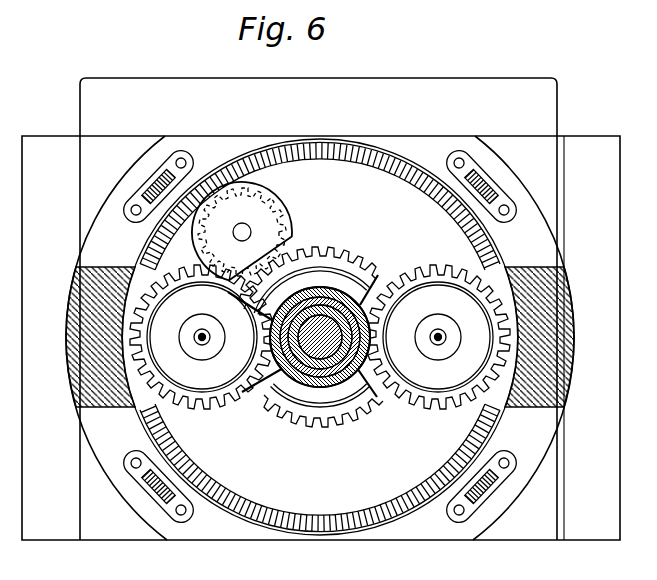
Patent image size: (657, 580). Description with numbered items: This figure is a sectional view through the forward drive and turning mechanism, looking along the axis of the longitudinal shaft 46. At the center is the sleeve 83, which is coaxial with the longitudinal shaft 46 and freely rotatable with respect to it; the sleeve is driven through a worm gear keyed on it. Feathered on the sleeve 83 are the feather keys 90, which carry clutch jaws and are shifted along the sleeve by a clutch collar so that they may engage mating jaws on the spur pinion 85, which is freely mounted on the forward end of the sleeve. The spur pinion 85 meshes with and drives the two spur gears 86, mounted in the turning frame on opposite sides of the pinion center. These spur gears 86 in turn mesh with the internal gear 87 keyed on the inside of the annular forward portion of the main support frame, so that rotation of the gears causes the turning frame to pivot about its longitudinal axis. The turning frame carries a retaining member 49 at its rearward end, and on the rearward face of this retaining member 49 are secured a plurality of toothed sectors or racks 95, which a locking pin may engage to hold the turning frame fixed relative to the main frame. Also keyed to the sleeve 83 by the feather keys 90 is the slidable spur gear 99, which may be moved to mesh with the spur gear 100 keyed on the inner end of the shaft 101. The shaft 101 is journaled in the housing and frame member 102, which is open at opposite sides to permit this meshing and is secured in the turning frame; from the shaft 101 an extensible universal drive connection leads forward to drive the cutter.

The longitudinal shaft 46 is at (331, 391).
The retaining member 49 is at (321, 309).
The sleeve 83 is at (320, 297).
The spur pinion 85 is at (303, 370).
The spur gears 86 is at (320, 359).
The internal gear 87 is at (320, 336).
The feather keys 90 is at (311, 348).
The toothed sectors or racks 95 is at (351, 343).
The spur gear 99 is at (316, 434).
The spur gear 100 is at (242, 199).
The shaft 101 is at (282, 180).
The housing and frame member 102 is at (266, 227).